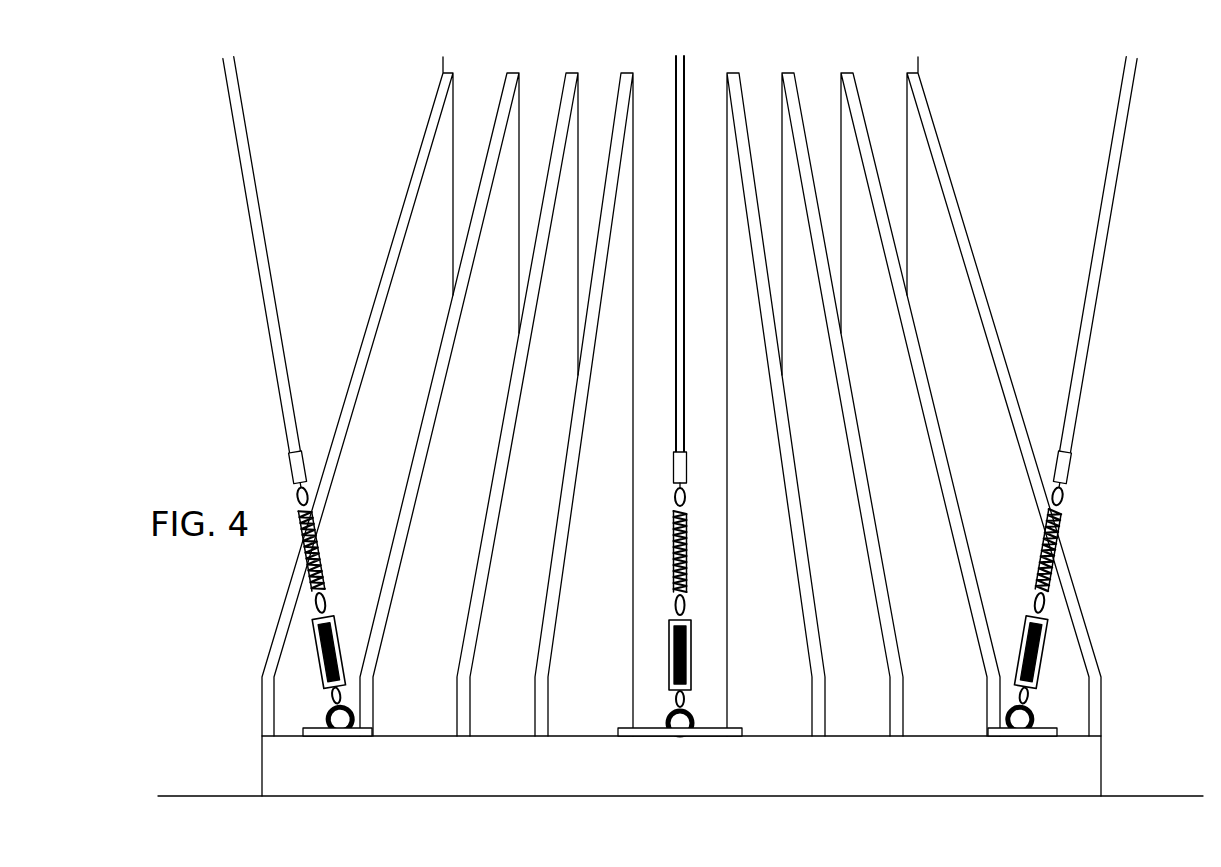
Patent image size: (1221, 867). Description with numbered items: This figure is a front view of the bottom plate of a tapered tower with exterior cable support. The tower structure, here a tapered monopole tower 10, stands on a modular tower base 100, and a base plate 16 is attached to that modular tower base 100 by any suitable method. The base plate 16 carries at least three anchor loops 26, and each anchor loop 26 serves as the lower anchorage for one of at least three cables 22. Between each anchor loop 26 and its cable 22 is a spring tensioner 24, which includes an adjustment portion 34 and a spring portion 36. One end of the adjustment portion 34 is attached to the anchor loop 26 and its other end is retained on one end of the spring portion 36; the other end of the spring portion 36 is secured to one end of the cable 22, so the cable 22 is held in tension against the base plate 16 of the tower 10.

The tapered monopole tower 10 is at (967, 173).
The base plate 16 is at (1102, 752).
The cable 22 is at (260, 287).
The spring tensioner 24 is at (293, 677).
The anchor loop 26 is at (348, 707).
The adjustment portion 34 is at (322, 647).
The spring portion 36 is at (320, 547).
The modular tower base 100 is at (223, 782).